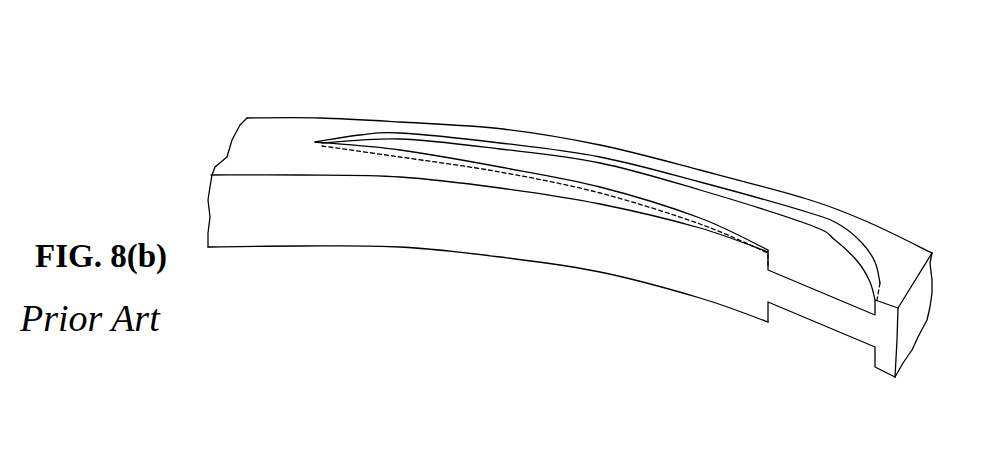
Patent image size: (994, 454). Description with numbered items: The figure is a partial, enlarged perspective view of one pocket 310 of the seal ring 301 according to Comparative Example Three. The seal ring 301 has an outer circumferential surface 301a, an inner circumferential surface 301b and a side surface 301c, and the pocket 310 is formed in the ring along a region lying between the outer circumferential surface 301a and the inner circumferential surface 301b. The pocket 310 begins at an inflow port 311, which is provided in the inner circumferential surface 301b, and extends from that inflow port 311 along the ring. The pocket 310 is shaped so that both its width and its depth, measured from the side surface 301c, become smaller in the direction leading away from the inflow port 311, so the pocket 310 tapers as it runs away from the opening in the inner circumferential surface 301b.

The seal ring 301 is at (570, 217).
The outer circumferential surface 301a is at (452, 122).
The inner circumferential surface 301b is at (418, 220).
The side surface 301c is at (292, 132).
The pocket 310 is at (610, 178).
The inflow port 311 is at (820, 277).